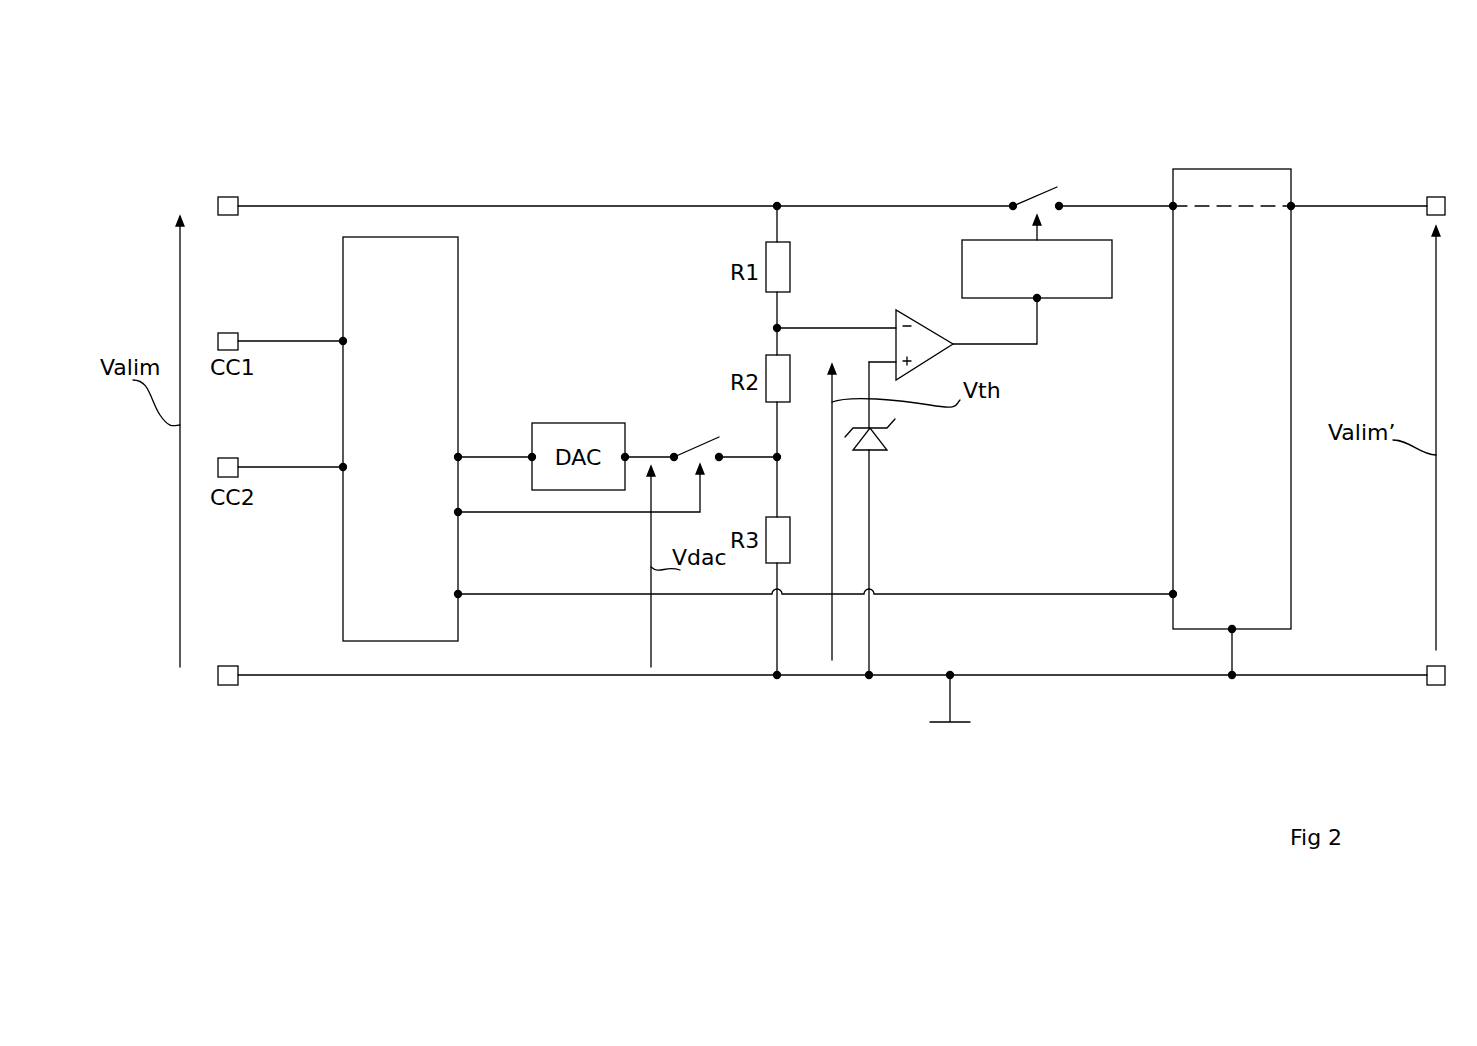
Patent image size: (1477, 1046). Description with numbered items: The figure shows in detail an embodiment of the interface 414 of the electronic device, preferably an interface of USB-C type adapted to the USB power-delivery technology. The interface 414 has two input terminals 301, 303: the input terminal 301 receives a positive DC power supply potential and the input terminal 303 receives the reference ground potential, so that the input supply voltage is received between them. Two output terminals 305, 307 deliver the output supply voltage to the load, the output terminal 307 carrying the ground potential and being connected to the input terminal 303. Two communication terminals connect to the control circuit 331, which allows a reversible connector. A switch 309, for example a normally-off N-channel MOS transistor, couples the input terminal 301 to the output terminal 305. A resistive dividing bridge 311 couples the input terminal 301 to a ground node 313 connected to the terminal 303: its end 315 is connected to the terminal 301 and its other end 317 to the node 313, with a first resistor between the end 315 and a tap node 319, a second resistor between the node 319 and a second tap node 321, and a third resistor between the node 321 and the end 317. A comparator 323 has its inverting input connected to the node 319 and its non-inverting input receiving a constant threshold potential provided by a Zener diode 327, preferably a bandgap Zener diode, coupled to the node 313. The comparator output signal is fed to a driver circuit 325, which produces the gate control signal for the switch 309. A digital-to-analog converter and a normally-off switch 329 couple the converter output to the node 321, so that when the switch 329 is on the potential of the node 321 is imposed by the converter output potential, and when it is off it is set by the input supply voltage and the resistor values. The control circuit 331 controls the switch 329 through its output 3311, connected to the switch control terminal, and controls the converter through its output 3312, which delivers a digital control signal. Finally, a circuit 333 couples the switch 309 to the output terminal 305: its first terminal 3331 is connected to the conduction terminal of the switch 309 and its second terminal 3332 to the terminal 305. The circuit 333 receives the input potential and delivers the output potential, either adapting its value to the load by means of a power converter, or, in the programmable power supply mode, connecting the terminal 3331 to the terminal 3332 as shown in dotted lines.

The input terminal 301 is at (228, 197).
The input terminal 303 is at (218, 676).
The output terminal 305 is at (1437, 197).
The output terminal 307 is at (1436, 685).
The switch 309 is at (1064, 194).
The resistive dividing bridge 311 is at (845, 125).
The node 313 is at (950, 675).
The end of dividing bridge 315 is at (777, 206).
The end of dividing bridge 317 is at (777, 677).
The node 319 is at (777, 328).
The node 321 is at (779, 455).
The comparator 323 is at (927, 330).
The driver circuit 325 is at (1037, 258).
The diode 327 is at (887, 440).
The switch 329 is at (694, 430).
The control circuit 331 is at (461, 281).
The output 3311 is at (458, 512).
The output 3312 is at (460, 457).
The circuit 333 is at (1232, 424).
The first terminal 3331 is at (1173, 206).
The second terminal 3332 is at (1291, 206).
The interface 414 is at (670, 160).